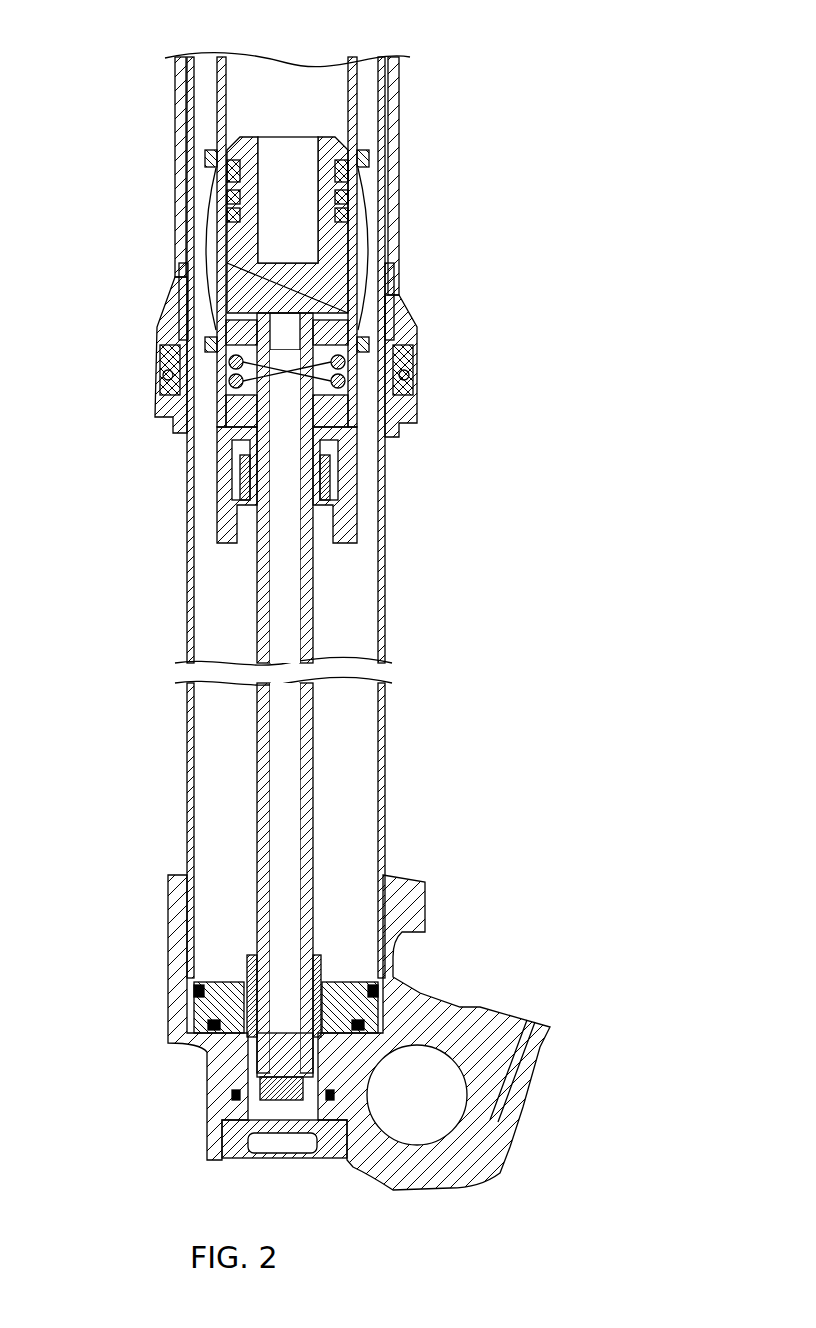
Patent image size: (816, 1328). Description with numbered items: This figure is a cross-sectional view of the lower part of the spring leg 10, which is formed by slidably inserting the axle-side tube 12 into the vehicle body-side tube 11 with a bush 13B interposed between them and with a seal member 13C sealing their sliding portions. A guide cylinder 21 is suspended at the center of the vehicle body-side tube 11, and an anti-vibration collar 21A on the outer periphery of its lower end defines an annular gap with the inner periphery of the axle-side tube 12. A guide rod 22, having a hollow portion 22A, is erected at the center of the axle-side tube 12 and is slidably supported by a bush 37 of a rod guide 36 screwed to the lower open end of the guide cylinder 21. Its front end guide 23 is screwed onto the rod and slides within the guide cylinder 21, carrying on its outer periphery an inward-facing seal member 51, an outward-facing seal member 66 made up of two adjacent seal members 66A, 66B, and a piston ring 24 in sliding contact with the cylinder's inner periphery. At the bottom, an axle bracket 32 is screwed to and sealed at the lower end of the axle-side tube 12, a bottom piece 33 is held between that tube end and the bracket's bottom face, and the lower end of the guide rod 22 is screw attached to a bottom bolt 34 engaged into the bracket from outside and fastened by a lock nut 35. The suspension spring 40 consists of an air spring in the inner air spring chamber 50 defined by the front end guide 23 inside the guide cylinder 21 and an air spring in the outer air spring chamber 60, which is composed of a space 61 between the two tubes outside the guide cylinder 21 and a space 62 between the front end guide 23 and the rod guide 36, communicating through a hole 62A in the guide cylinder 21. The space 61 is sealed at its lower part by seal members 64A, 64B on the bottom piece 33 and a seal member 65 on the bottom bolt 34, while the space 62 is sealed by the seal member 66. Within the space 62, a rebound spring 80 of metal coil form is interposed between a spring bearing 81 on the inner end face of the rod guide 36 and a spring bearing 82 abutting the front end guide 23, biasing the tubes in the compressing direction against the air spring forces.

The spring leg 10 is at (126, 41).
The vehicle body-side tube 11 is at (176, 145).
The axle-side tube 12 is at (188, 758).
The bush 13B is at (190, 292).
The seal member 13C is at (160, 350).
The guide cylinder 21 is at (222, 90).
The anti-vibration collar 21A is at (212, 200).
The guide rod 22 is at (256, 718).
The hollow portion 22A is at (287, 730).
The front end guide 23 is at (335, 142).
The piston ring 24 is at (395, 290).
The axle bracket 32 is at (215, 1065).
The bottom piece 33 is at (196, 1017).
The bottom bolt 34 is at (243, 1127).
The lock nut 35 is at (247, 967).
The rod guide 36 is at (342, 533).
The bush 37 is at (350, 492).
The suspension spring 40 is at (325, 91).
The inner air spring chamber 50 is at (327, 110).
The inward-facing seal member 51 is at (366, 160).
The outer air spring chamber 60 is at (213, 797).
The space 61 is at (213, 826).
The space 62 is at (236, 395).
The hole 62A is at (228, 378).
The seal member 64A is at (196, 990).
The seal member 64B is at (212, 1030).
The seal member 65 is at (238, 1102).
The outward-facing seal member 66 is at (343, 173).
The outward-facing seal member 66A is at (340, 200).
The outward-facing seal member 66B is at (340, 222).
The rebound spring 80 is at (333, 357).
The spring bearing 81 is at (345, 405).
The spring bearing 82 is at (367, 325).